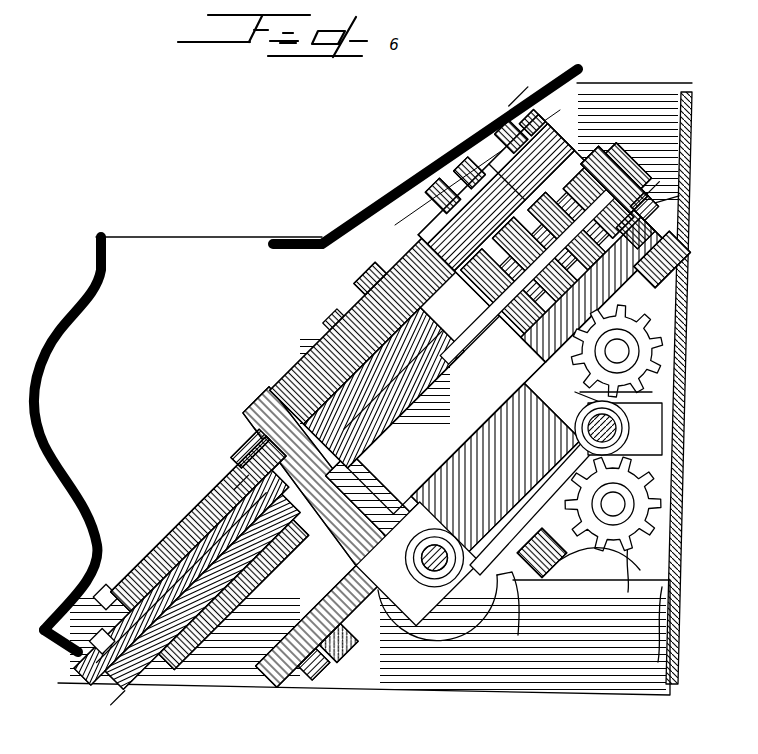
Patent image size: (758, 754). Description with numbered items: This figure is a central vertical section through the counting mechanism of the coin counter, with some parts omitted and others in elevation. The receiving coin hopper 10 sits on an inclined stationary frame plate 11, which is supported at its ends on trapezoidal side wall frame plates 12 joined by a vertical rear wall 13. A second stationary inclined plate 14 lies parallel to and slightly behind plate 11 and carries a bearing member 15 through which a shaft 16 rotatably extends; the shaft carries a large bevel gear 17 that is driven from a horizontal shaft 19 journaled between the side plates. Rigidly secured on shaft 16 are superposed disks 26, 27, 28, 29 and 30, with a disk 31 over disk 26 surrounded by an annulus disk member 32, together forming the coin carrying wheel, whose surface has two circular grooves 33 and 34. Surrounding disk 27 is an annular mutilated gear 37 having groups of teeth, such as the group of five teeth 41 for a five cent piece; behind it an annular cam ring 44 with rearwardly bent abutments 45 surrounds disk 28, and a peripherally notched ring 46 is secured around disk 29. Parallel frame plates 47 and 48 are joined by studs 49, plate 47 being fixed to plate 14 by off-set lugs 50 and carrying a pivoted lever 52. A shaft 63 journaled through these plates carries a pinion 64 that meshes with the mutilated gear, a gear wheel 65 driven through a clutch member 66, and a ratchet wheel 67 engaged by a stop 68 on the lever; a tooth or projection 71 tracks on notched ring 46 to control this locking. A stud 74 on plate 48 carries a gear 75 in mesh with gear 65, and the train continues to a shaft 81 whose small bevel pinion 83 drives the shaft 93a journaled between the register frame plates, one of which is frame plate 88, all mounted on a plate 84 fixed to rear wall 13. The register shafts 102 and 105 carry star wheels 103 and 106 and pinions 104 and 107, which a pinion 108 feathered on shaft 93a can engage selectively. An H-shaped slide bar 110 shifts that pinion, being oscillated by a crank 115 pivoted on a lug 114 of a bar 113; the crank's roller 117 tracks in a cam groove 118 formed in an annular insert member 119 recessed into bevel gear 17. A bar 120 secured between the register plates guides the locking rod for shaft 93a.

The receiving coin hopper 10 is at (72, 490).
The inclined stationary frame plate 11 is at (85, 640).
The trapezoidal side wall frame plates 12 is at (364, 637).
The vertical rear wall 13 is at (690, 208).
The stationary inclined plate 14 is at (152, 645).
The bearing member 15 is at (312, 512).
The shaft 16 is at (400, 392).
The large bevel gear 17 is at (287, 674).
The horizontal shaft 19 is at (434, 560).
The disk 26 is at (243, 455).
The disk 27 is at (235, 465).
The disk 28 is at (238, 492).
The disk 29 is at (230, 493).
The disk 30 is at (255, 530).
The disk 31 is at (255, 452).
The annulus disk member 32 is at (128, 580).
The circular groove 33 is at (430, 214).
The circular groove 34 is at (398, 260).
The annular mutilated gear 37 is at (440, 195).
The group of five teeth 41 is at (543, 170).
The annular cam ring 44 is at (360, 284).
The rearwardly bent abutments 45 is at (124, 656).
The peripherally notched ring 46 is at (348, 306).
The frame plate 47 is at (445, 350).
The frame plate 48 is at (480, 395).
The studs 49 is at (592, 178).
The off-set lugs 50 is at (582, 158).
The lever 52 is at (502, 183).
The shaft 63 is at (582, 198).
The pinion 64 is at (448, 173).
The gear wheel 65 is at (620, 240).
The clutch member 66 is at (582, 326).
The ratchet wheel 67 is at (543, 217).
The stop 68 is at (513, 203).
The tooth or projection 71 is at (432, 241).
The stud 74 is at (622, 248).
The gear 75 is at (596, 230).
The shaft 81 is at (593, 289).
The small bevel pinion 83 is at (640, 368).
The plate 84 is at (660, 610).
The frame plate 88 is at (628, 592).
The shaft 93a is at (620, 433).
The shaft 102 is at (645, 335).
The star wheel 103 is at (635, 330).
The pinion 104 is at (620, 348).
The shaft 105 is at (616, 504).
The star wheel 106 is at (658, 500).
The pinion 107 is at (647, 519).
The pinion 108 is at (622, 396).
The H-shaped slide bar 110 is at (539, 500).
The plate or bar 113 is at (517, 602).
The lug 114 is at (496, 480).
The crank 115 is at (437, 608).
The roller 117 is at (456, 440).
The cam groove 118 is at (353, 670).
The annular insert member 119 is at (316, 663).
The bar 120 is at (548, 552).